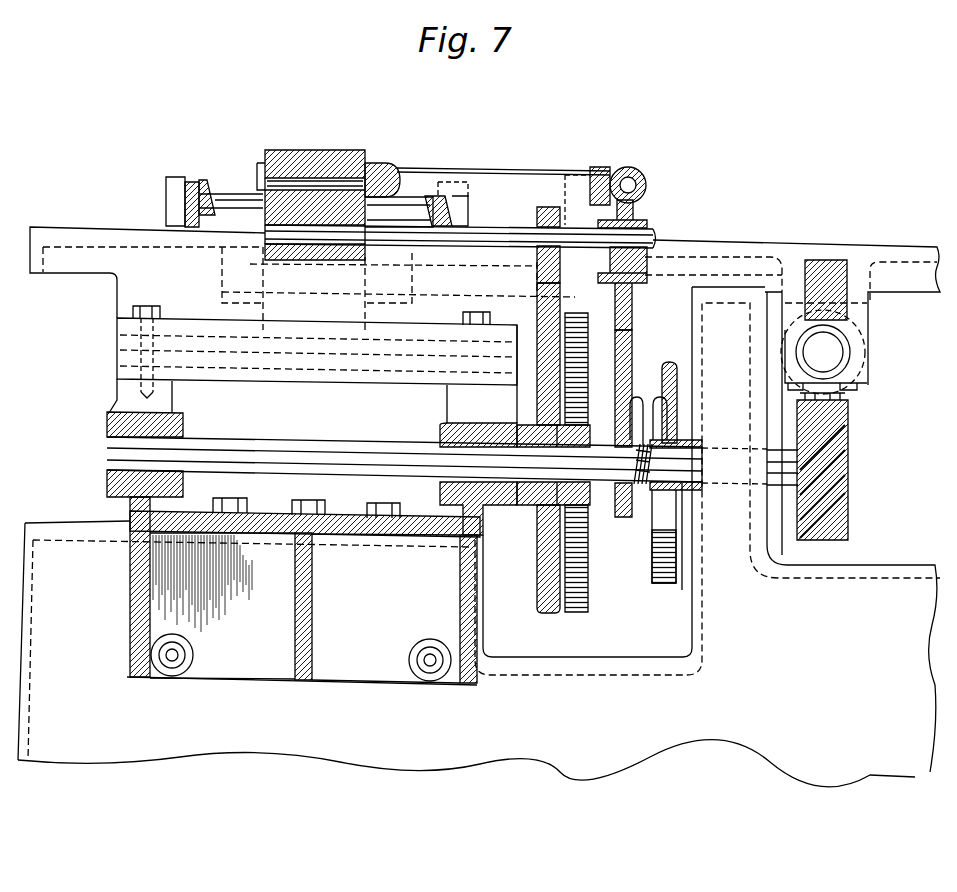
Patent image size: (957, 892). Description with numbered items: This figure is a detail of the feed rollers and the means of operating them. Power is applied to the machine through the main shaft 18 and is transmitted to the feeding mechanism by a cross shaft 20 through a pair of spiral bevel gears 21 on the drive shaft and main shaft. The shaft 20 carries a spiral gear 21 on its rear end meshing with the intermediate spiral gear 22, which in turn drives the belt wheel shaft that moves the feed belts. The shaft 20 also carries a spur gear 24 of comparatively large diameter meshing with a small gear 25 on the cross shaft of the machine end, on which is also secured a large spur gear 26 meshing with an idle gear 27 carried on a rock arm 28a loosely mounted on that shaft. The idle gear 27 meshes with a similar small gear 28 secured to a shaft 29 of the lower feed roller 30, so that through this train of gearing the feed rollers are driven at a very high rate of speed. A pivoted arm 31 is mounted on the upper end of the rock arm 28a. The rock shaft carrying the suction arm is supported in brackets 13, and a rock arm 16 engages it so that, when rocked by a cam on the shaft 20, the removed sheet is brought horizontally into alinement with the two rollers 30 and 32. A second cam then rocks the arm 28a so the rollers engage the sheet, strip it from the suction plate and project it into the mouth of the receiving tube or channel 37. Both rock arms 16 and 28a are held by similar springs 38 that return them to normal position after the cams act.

The bracket 13 is at (170, 406).
The rock arm 16 is at (677, 374).
The main shaft 18 is at (830, 352).
The cross shaft 20 is at (598, 467).
The spiral bevel gear 21 is at (842, 422).
The intermediate spiral gear 22 is at (850, 395).
The spur gear 24 is at (580, 598).
The small gear 25 is at (596, 422).
The spur gear 26 is at (540, 553).
The idle gear 27 is at (540, 290).
The small gear 28 is at (547, 208).
The rock arm 28a is at (625, 333).
The shaft 29 is at (495, 226).
The lower feed roller 30 is at (262, 252).
The pivoted arm 31 is at (437, 168).
The feed roller 32 is at (348, 150).
The receiving tube or channel 37 is at (226, 215).
The spring 38 is at (646, 398).